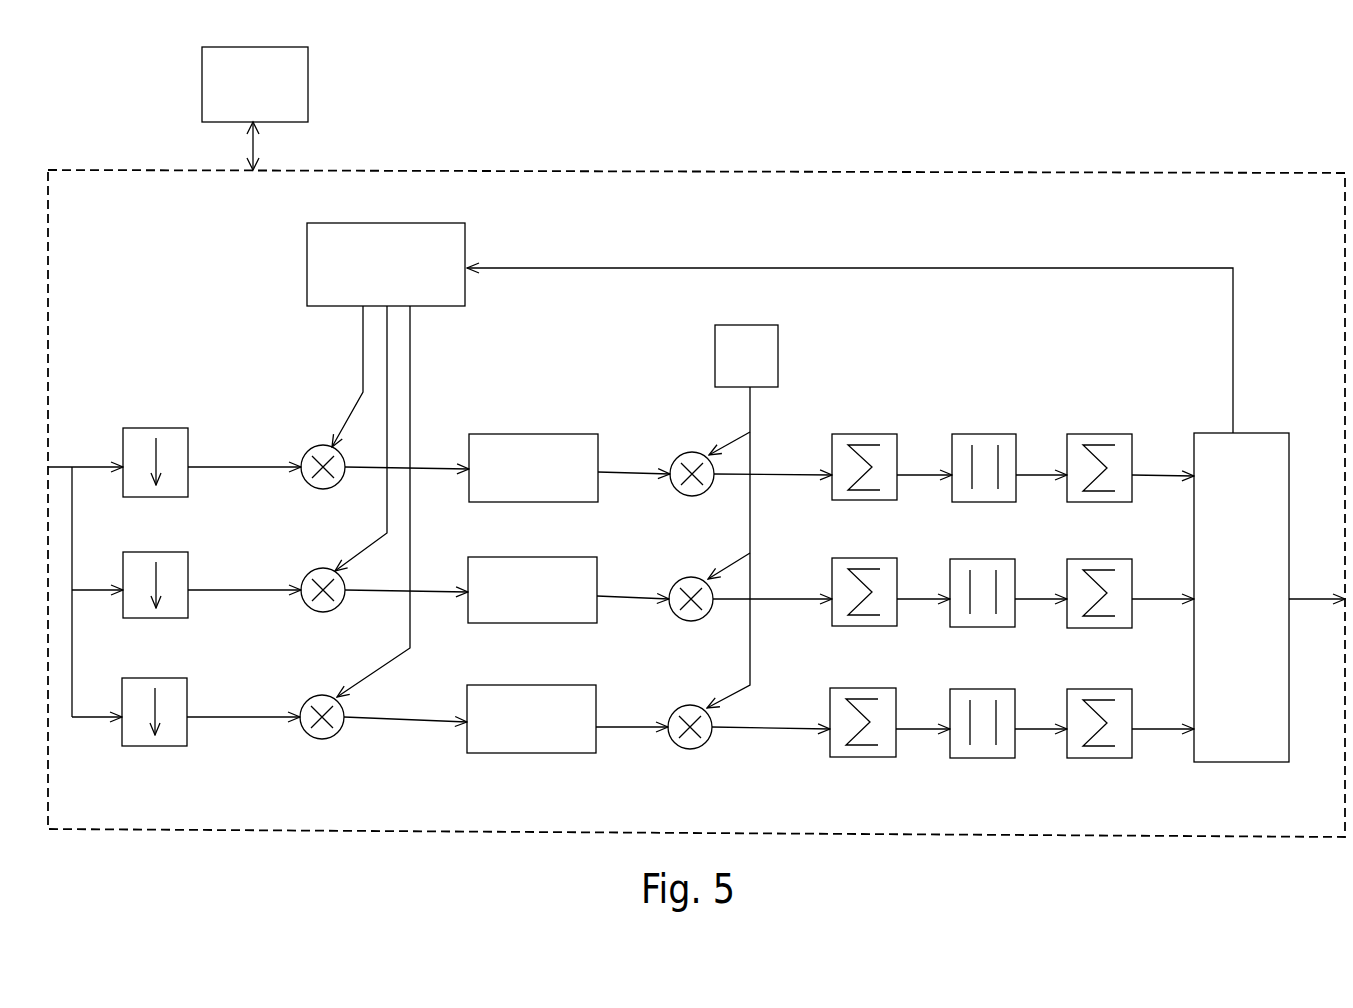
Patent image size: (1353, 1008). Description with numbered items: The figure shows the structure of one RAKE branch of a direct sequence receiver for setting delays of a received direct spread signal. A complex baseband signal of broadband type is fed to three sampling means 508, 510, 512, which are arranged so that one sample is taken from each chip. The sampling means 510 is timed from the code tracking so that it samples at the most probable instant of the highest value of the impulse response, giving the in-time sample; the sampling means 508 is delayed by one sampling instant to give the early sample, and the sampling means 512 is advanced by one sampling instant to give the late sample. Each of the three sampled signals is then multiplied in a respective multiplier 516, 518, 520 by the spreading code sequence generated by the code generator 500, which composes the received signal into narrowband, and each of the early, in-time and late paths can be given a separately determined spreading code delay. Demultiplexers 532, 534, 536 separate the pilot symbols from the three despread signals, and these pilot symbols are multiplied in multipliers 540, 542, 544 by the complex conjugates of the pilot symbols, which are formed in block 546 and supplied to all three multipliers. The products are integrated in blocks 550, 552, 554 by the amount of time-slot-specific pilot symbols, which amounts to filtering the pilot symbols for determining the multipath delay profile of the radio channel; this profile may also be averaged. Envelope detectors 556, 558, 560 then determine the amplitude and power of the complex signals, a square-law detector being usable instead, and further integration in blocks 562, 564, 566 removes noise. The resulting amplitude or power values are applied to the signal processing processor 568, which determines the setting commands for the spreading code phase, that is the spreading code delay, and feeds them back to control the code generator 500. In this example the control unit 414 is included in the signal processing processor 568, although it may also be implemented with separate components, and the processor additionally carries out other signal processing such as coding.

The control unit 414 is at (202, 107).
The code generator 500 is at (375, 223).
The sampling means 508 is at (123, 446).
The sampling means 510 is at (188, 603).
The sampling means 512 is at (133, 746).
The multiplier 516 is at (325, 489).
The multiplier 518 is at (325, 612).
The multiplier 520 is at (325, 740).
The demultiplexer 532 is at (527, 434).
The demultiplexer 534 is at (527, 557).
The demultiplexer 536 is at (527, 753).
The multiplier 540 is at (700, 497).
The multiplier 542 is at (698, 622).
The multiplier 544 is at (697, 750).
The block 546 is at (778, 350).
The block 550 is at (853, 434).
The block 552 is at (842, 558).
The block 554 is at (897, 745).
The envelope detector 556 is at (972, 434).
The envelope detector 558 is at (988, 559).
The envelope detector 560 is at (1016, 745).
The block 562 is at (1073, 434).
The block 564 is at (1062, 613).
The block 566 is at (1132, 745).
The signal processing processor 568 is at (1258, 433).